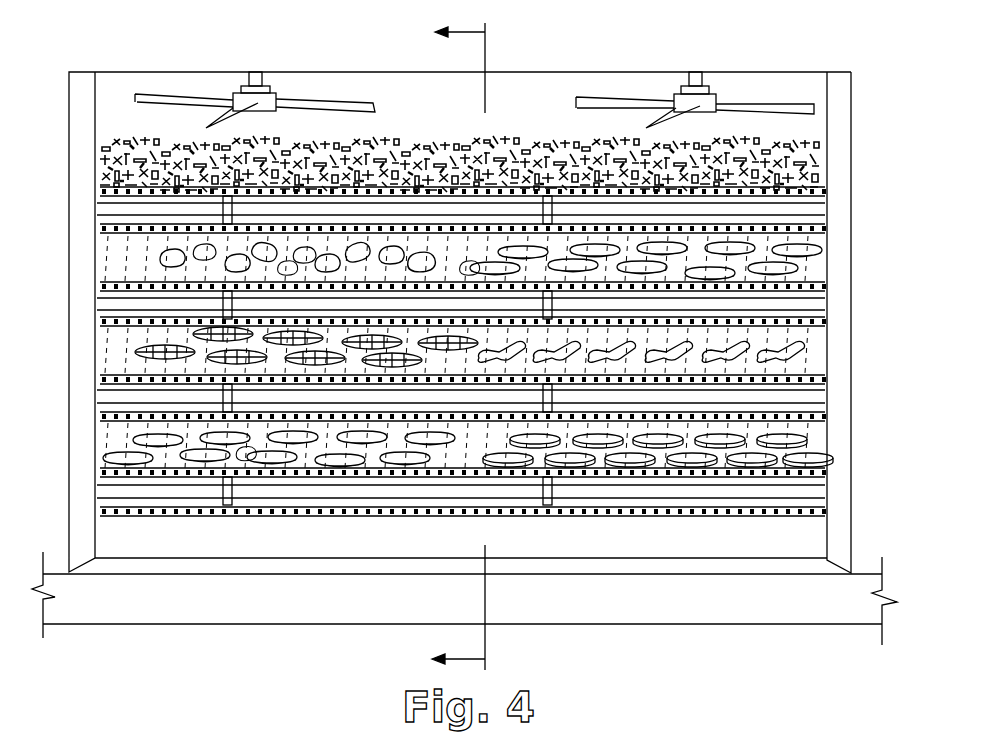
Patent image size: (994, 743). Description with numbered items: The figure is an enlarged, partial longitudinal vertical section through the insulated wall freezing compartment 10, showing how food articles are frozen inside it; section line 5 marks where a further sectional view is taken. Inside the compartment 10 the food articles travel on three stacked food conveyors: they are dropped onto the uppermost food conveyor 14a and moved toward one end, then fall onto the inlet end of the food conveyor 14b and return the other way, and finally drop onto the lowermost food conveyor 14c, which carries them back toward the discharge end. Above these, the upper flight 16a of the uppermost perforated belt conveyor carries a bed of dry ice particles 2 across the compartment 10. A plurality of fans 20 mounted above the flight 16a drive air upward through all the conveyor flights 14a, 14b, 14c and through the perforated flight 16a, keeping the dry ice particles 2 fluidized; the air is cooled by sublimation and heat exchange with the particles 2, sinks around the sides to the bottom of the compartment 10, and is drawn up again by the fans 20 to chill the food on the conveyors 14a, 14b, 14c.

The insulated wall freezing compartment 10 is at (766, 594).
The dry ice particles 2 is at (417, 143).
The fans 20 is at (338, 102).
The upper flight of dry ice conveyor 16a is at (827, 170).
The uppermost food conveyor 14a is at (807, 277).
The food conveyor 14b is at (808, 362).
The lowermost food conveyor 14c is at (818, 447).
The section line 5- 5 is at (448, 348).